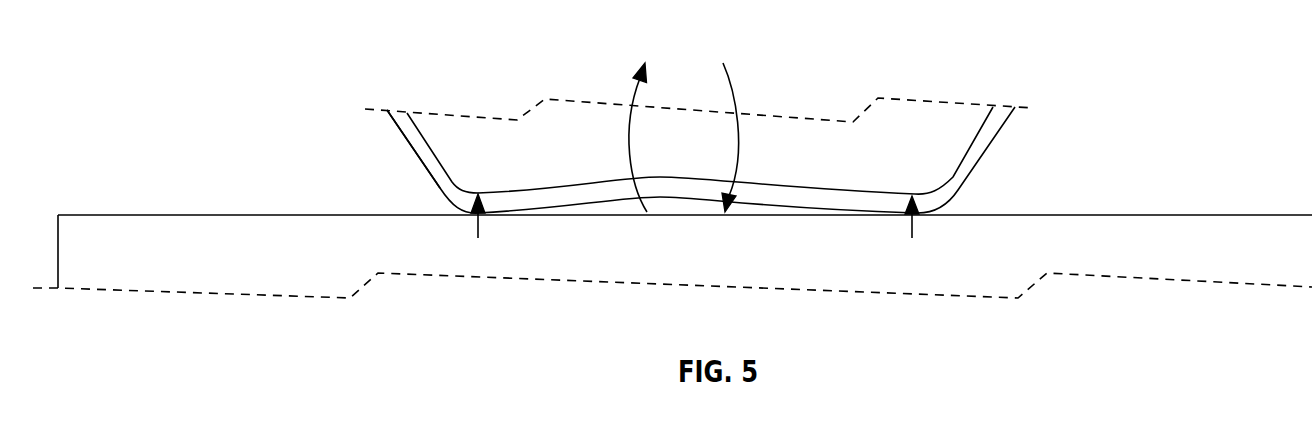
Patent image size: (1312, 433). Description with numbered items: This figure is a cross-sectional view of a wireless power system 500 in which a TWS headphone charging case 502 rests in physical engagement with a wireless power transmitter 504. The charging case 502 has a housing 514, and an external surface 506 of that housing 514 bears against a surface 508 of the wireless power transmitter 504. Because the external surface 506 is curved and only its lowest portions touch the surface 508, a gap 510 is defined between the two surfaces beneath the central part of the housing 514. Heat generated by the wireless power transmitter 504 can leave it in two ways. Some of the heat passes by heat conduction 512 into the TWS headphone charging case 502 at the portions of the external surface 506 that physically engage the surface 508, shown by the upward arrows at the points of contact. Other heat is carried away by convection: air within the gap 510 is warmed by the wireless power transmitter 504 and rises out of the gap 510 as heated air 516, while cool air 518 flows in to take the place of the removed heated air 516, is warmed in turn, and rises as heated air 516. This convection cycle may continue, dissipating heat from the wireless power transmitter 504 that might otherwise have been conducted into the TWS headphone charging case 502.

The wireless power system 500 is at (1099, 99).
The TWS headphone charging case 502 is at (462, 136).
The wireless power transmitter 504 is at (275, 215).
The external surface 506 is at (823, 208).
The surface 508 is at (588, 215).
The gap 510 is at (673, 208).
The heat conduction 512 is at (477, 229).
The housing 514 is at (412, 152).
The heated air 516 is at (640, 92).
The cool air 518 is at (735, 93).